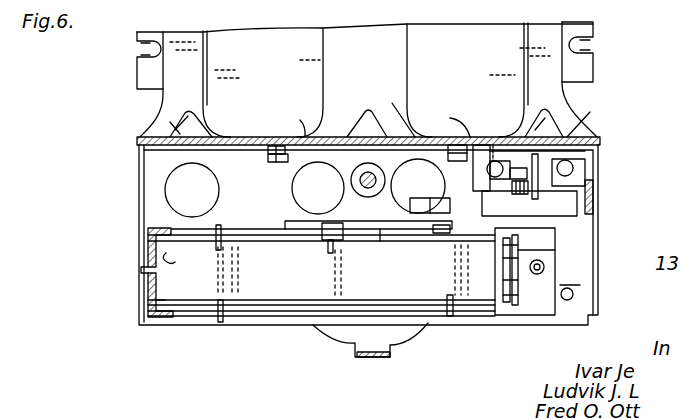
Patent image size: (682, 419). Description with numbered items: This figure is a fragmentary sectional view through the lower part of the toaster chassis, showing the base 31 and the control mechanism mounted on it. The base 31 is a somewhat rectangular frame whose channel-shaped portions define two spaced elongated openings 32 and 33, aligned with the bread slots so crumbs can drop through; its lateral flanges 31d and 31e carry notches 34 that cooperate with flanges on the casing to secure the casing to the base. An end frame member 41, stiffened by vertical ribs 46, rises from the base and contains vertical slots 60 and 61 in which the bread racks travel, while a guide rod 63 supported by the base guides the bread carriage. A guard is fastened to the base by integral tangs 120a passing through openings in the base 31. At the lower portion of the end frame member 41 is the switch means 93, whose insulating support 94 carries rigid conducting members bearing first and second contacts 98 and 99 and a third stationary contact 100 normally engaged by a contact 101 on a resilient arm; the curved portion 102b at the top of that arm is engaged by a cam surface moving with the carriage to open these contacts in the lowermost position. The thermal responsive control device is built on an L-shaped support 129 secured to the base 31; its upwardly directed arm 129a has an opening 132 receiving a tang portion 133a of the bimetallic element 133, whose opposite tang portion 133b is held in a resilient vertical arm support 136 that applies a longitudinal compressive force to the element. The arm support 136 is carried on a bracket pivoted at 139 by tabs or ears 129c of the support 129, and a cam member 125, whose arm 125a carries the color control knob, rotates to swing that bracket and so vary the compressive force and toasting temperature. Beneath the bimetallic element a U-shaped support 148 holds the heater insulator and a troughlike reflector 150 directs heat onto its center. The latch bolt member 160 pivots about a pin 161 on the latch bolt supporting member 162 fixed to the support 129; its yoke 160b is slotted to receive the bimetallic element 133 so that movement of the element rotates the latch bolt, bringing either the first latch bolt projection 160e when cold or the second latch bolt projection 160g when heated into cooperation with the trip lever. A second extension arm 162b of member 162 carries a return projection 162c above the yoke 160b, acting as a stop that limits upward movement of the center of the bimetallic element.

The base 31 is at (585, 253).
The lateral flange 31d is at (137, 40).
The notch 34 is at (142, 54).
The lateral flange 31e is at (592, 25).
The elongated opening 32 is at (207, 57).
The elongated opening 33 is at (409, 48).
The vertical rib 46 is at (212, 128).
The end frame member 41 is at (288, 120).
The tang member 120a is at (384, 112).
The vertical slot 61 is at (448, 120).
The first contact 98 is at (493, 140).
The switch means 93 is at (600, 106).
The insulating support 94 is at (587, 153).
The second contact 99 is at (573, 168).
The curved portion 102b is at (588, 194).
The third stationary contact 100 is at (529, 189).
The contact 101 is at (525, 194).
The guide rod 63 is at (368, 172).
The latch bolt supporting member 162 is at (313, 214).
The second latch bolt projection 160g is at (440, 208).
The first latch bolt projection 160e is at (410, 208).
The vertical slot 60 is at (270, 161).
The second extension arm 162b is at (290, 221).
The bimetallic element 133 is at (191, 285).
The L-shaped support 129 is at (150, 330).
The tang portion 133a is at (141, 273).
The upwardly directed arm 129a is at (144, 302).
The opening 132 is at (187, 259).
The U-shaped support 148 is at (243, 308).
The troughlike reflector 150 is at (278, 305).
The return projection 162c is at (320, 247).
The yoke 160b is at (352, 257).
The latch bolt member 160 is at (385, 232).
The pin 161 is at (433, 235).
The tabs or ears 129c is at (507, 255).
The pivot point 139 is at (522, 248).
The vertical arm support 136 is at (497, 297).
The tang portion 133b is at (522, 277).
The cam member 125 is at (400, 337).
The arm 125a is at (372, 358).